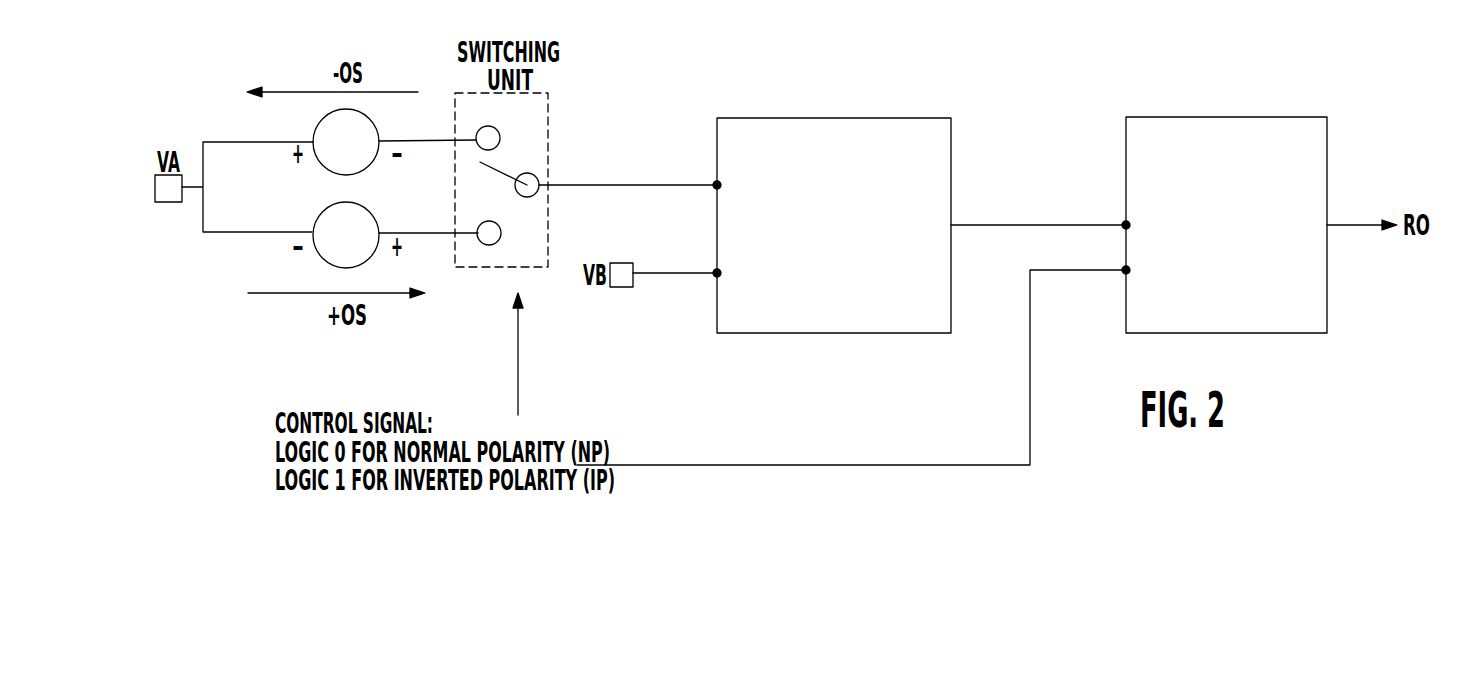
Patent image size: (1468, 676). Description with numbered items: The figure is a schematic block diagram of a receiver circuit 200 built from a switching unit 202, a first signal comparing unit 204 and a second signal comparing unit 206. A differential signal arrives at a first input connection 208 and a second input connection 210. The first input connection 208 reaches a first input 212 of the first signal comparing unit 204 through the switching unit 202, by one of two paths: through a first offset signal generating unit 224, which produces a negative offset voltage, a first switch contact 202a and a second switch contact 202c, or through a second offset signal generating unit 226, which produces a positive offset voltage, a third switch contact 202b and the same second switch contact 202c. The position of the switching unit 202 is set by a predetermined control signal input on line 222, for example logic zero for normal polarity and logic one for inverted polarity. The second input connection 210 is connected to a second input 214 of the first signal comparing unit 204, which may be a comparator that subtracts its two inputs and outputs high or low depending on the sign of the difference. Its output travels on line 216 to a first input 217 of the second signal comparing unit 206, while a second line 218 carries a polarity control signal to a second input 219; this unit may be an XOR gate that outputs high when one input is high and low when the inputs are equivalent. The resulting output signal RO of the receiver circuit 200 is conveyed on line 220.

The receiver circuit 200 is at (1400, 148).
The switching unit 202 is at (549, 100).
The first switch contact 202a is at (500, 140).
The third switch contact 202b is at (489, 245).
The second switch contact 202c is at (541, 183).
The first signal comparing unit 204 is at (848, 118).
The second signal comparing unit 206 is at (1281, 117).
The first input connection 208 is at (155, 187).
The second input connection 210 is at (615, 287).
The first input 212 is at (717, 185).
The second input 214 is at (717, 273).
The line 216 is at (1015, 225).
The first input 217 is at (1126, 225).
The second line 218 is at (1068, 270).
The second input 219 is at (1126, 270).
The line 220 is at (1350, 227).
The line 222 is at (518, 352).
The first offset signal generating unit 224 is at (379, 136).
The second offset signal generating unit 226 is at (318, 255).